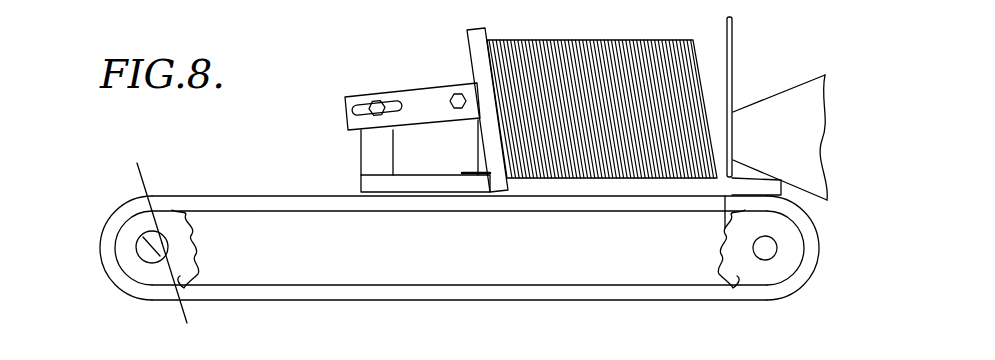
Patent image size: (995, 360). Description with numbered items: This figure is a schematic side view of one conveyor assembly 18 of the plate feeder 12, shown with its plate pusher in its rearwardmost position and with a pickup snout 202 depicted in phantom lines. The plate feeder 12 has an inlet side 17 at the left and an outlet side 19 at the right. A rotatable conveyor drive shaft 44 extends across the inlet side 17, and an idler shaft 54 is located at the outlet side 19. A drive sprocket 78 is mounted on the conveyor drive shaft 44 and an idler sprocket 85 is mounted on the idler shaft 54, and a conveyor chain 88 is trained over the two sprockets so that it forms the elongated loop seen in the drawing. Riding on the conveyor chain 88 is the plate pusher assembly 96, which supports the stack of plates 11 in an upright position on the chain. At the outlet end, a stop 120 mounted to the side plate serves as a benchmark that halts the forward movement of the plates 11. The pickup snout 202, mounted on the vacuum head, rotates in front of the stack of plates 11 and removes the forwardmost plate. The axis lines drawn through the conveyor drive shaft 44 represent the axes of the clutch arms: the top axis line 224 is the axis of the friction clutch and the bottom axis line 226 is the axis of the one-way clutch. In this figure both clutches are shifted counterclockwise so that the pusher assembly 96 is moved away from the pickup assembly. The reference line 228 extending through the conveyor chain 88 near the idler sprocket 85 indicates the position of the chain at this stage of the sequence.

The plates 11 is at (608, 40).
The plate feeder 12 is at (306, 147).
The inlet side 17 is at (95, 207).
The conveyor assembly 18 is at (253, 175).
The outlet side 19 is at (832, 248).
The conveyor drive shaft 44 is at (150, 255).
The idler shaft 54 is at (773, 253).
The drive sprocket 78 is at (200, 266).
The idler sprocket 85 is at (722, 268).
The conveyor chain 88 is at (363, 213).
The plate pusher assembly 96 is at (414, 84).
The stop 120 is at (757, 178).
The pickup snout 202 is at (767, 108).
The top axis line 224 is at (142, 179).
The bottom axis line 226 is at (185, 313).
The reference line 228 is at (720, 218).